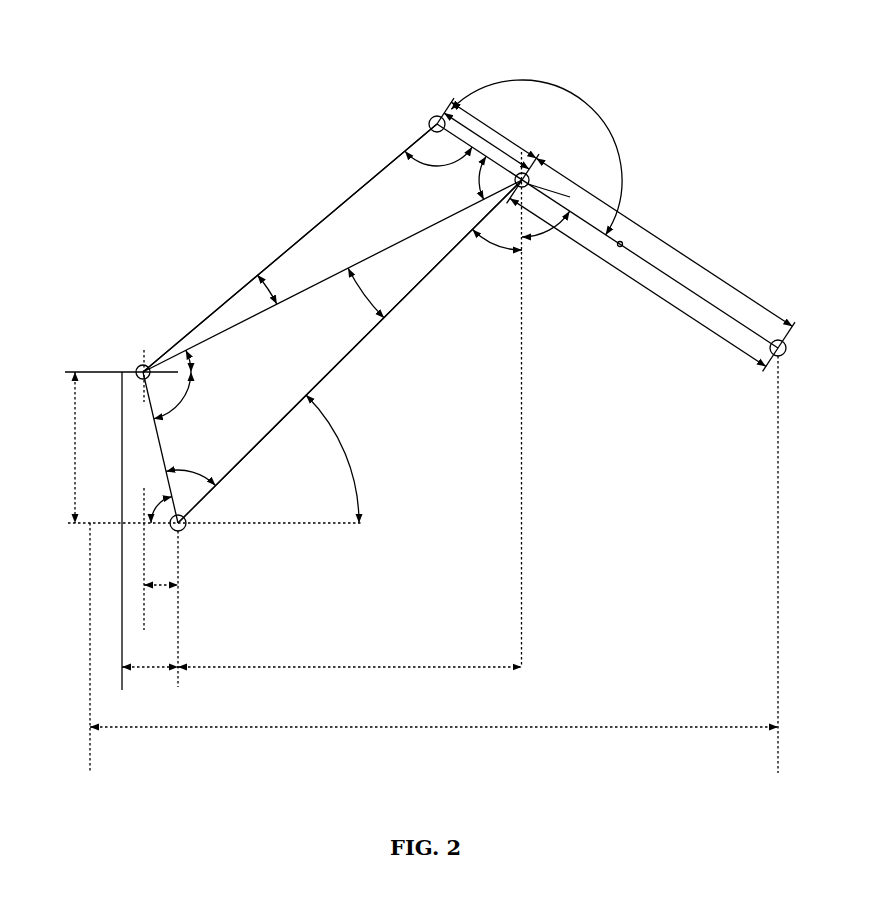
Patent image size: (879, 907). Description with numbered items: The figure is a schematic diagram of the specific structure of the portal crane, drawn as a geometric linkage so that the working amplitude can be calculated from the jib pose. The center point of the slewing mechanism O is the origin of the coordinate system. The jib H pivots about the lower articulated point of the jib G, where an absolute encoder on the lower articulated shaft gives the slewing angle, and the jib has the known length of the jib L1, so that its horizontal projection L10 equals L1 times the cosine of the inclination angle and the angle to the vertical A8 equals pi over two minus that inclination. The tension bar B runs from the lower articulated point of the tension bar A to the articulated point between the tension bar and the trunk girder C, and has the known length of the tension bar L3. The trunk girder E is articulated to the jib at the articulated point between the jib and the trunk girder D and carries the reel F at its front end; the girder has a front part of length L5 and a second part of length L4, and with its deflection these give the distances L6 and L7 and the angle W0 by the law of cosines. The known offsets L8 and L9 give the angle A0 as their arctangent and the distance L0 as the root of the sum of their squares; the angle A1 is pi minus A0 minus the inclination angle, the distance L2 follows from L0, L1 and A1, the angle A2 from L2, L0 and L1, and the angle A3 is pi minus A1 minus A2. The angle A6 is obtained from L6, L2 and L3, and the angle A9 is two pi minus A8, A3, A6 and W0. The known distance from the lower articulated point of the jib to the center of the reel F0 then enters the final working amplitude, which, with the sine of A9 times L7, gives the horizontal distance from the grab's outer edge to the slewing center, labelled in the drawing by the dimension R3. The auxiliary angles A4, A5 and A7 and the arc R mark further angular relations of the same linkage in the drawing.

The lower articulated point of the tension bar A is at (143, 372).
The tension bar B is at (220, 308).
The articulated point between the tension bar and the trunk girder C is at (439, 118).
The articulated point between the jib and the trunk girder D is at (525, 178).
The trunk girder E is at (620, 244).
The reel F is at (776, 355).
The lower articulated point of the jib G is at (180, 531).
The jib H is at (363, 338).
The center point of the slewing mechanism O is at (122, 523).
The distance from O-reference to lower articulated point of the jib L0 is at (163, 450).
The length of the jib L1 is at (415, 287).
The distance between lower articulated point of tension bar and jib-girder articulat L2 is at (327, 283).
The length of the tension bar L3 is at (278, 255).
The length of a second part of the trunk girder L4 is at (488, 139).
The length of a front part of the trunk girder L5 is at (665, 253).
The distance along the deflected second part of the trunk girder L6 is at (486, 141).
The distance along the deflected front part of the trunk girder L7 is at (642, 275).
The horizontal distance L8 is at (150, 658).
The vertical distance L9 is at (66, 447).
The horizontal distance of the jib L10 is at (350, 658).
The horizontal distance R3 is at (434, 564).
The distance from the lower articulated point of the jib to a center of the reel F0 is at (161, 576).
The angle R is at (332, 459).
The angle of the trunk girder deflection W0 is at (536, 157).
The angle at the lower articulated point of the jib A0 is at (160, 504).
The angle between the jib and the line L0 A1 is at (190, 471).
The angle at the lower articulated point of the tension bar A2 is at (172, 395).
The angle at the jib-girder articulated point A3 is at (371, 293).
The angle A4 is at (275, 289).
The angle A5 is at (438, 156).
The angle between L6 and L2 at the jib-girder articulated point A6 is at (470, 177).
The angle A7 is at (179, 361).
The angle between the jib and the vertical A8 is at (498, 254).
The angle of the front part of the trunk girder from the vertical A9 is at (546, 232).